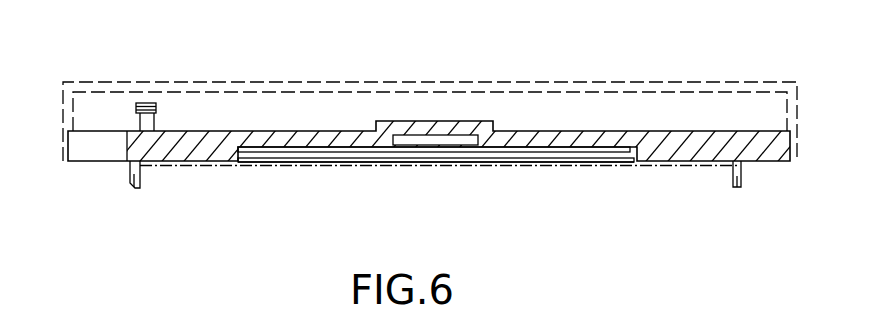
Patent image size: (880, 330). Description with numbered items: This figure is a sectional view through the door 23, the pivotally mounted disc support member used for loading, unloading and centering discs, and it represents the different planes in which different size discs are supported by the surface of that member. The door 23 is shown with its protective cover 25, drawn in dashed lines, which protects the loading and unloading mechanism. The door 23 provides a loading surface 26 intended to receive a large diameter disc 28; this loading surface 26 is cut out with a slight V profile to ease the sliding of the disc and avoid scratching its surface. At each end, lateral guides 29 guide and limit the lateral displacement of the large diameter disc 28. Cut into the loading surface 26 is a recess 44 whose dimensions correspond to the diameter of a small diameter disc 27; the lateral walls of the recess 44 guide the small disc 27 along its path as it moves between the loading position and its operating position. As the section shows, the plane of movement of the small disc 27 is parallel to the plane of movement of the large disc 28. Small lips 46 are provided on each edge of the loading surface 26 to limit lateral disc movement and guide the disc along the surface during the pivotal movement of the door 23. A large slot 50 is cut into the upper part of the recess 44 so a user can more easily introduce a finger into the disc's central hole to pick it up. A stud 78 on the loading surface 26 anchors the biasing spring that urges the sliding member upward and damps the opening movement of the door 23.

The door 23 is at (126, 215).
The protective cover 25 is at (267, 82).
The loading surface 26 is at (208, 148).
The small diameter disc 27 is at (381, 167).
The large diameter disc 28 is at (543, 167).
The lateral guides 29 is at (141, 186).
The recess 44 is at (357, 158).
The small lips 46 is at (242, 159).
The slot 50 is at (426, 143).
The stud 78 is at (140, 122).